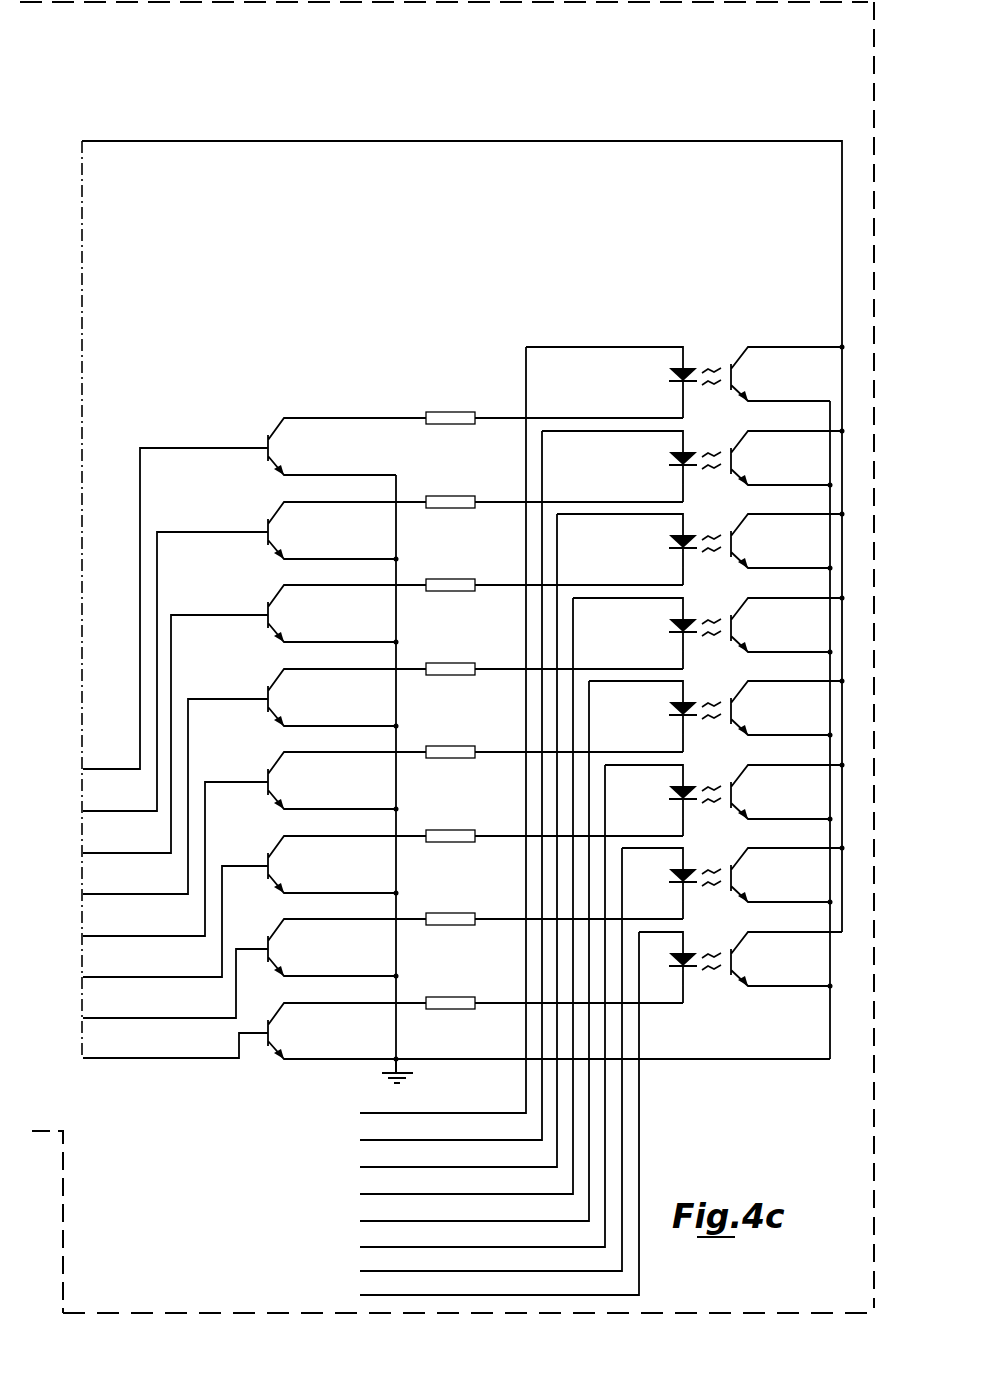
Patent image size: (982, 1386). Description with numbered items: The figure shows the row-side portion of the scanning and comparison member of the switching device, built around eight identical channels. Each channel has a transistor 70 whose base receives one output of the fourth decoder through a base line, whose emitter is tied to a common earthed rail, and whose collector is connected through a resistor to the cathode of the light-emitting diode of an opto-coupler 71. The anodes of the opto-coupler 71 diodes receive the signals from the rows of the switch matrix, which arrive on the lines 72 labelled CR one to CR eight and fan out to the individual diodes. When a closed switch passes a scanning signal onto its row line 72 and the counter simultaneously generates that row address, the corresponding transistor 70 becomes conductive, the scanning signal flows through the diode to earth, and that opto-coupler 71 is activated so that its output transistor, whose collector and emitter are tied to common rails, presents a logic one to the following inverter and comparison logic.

The transistor 70 is at (280, 412).
The opto-coupler 71 is at (693, 350).
The line 72 is at (298, 1222).